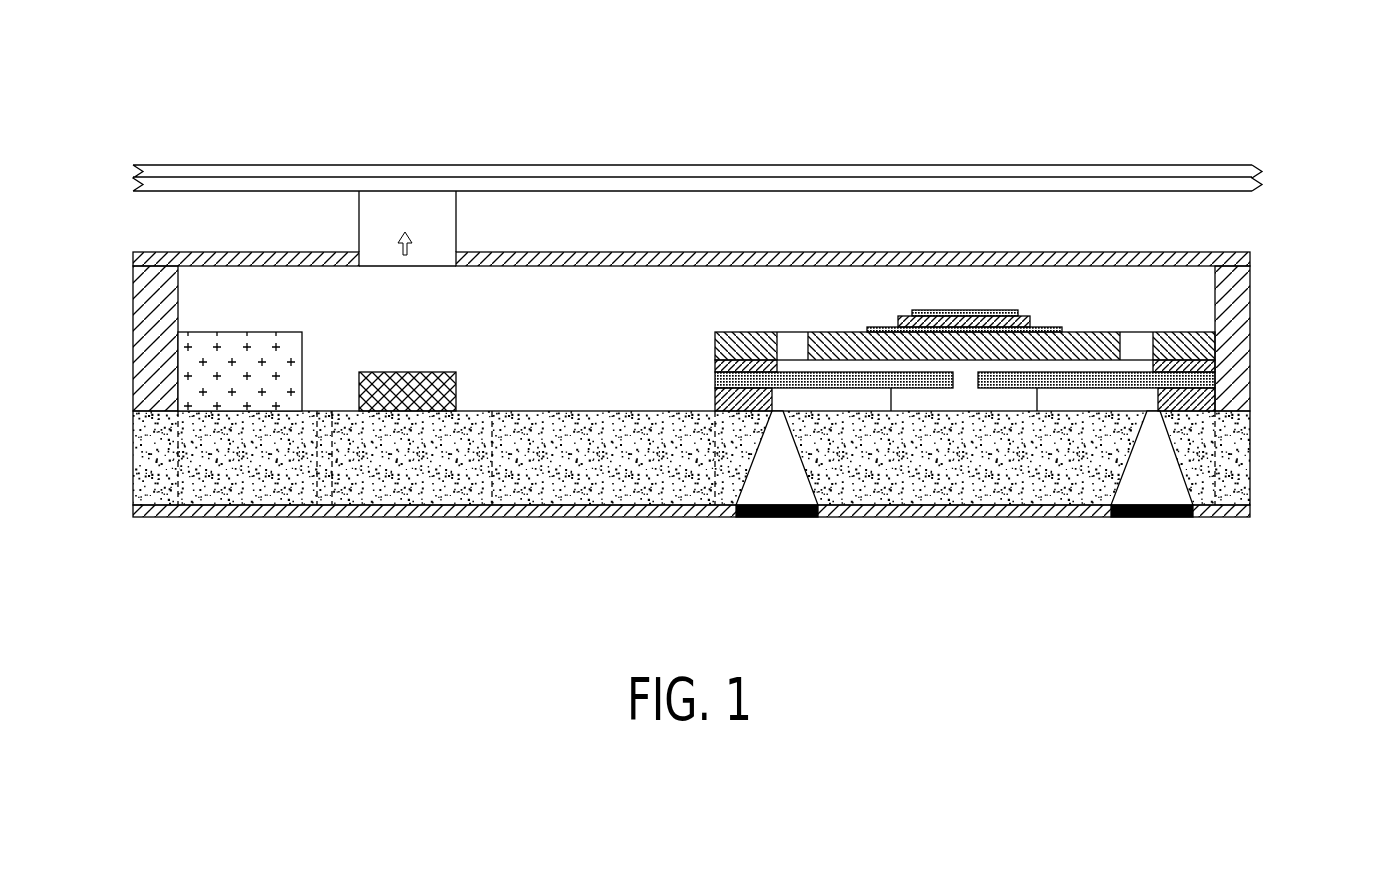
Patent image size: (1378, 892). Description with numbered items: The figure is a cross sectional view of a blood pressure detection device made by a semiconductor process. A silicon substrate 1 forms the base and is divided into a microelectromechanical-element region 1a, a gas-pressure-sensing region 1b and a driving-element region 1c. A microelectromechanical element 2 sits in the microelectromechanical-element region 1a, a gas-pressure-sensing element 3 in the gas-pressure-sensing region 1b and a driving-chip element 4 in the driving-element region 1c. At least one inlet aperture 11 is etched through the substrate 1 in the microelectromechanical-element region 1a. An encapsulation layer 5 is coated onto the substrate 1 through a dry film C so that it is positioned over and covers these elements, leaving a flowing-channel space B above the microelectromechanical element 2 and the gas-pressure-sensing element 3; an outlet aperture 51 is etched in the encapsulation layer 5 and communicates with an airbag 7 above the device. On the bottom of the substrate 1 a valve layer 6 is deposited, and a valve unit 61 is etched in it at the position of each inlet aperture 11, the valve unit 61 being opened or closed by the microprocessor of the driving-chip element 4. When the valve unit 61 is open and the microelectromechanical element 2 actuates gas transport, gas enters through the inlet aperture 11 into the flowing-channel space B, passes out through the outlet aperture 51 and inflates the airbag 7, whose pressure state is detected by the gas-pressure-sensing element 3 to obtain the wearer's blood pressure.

The substrate 1 is at (1250, 483).
The microelectromechanical-element region 1a is at (715, 487).
The gas-pressure-sensing region 1b is at (332, 495).
The driving-element region 1c is at (178, 490).
The inlet aperture 11 is at (785, 477).
The microelectromechanical element 2 is at (1203, 350).
The gas-pressure-sensing element 3 is at (422, 362).
The driving-chip element 4 is at (264, 297).
The encapsulation layer 5 is at (1205, 256).
The outlet aperture 51 is at (428, 260).
The valve layer 6 is at (1239, 527).
The valve unit 61 is at (810, 517).
The airbag 7 is at (413, 165).
The flowing-channel space B is at (828, 283).
The dry film C is at (167, 322).